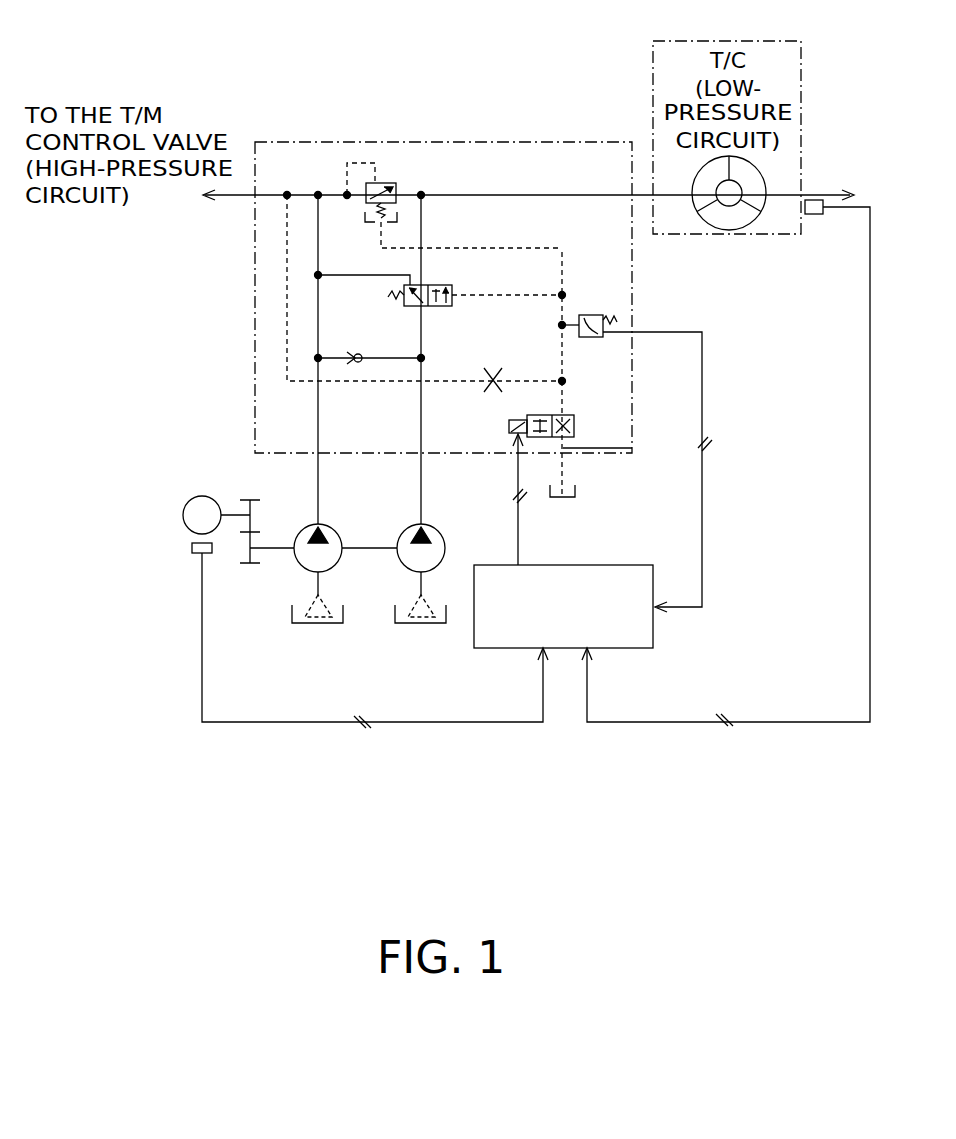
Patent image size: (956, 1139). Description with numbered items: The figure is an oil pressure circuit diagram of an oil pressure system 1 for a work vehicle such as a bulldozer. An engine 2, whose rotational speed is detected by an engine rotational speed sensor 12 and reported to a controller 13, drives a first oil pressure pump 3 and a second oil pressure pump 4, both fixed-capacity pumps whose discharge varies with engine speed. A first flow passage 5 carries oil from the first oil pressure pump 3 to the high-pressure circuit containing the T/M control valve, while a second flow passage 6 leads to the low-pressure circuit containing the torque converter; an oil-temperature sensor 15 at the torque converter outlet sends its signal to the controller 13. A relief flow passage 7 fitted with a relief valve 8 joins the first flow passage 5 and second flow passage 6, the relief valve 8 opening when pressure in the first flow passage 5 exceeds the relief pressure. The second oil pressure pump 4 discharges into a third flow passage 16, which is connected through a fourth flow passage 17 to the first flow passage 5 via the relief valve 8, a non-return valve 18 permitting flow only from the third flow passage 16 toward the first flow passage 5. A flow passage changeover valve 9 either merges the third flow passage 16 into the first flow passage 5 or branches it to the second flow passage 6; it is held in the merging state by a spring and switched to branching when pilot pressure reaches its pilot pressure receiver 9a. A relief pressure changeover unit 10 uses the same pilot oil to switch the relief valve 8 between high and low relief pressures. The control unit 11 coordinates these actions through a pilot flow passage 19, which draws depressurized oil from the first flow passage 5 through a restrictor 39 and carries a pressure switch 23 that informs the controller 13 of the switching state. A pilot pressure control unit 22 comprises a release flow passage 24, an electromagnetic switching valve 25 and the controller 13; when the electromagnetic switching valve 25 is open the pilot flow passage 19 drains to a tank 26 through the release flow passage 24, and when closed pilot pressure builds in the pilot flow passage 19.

The oil pressure system 1 is at (303, 68).
The engine 2 is at (193, 500).
The first oil pressure pump 3 is at (305, 527).
The second oil pressure pump 4 is at (405, 527).
The first flow passage 5 is at (318, 218).
The second flow passage 6 is at (421, 221).
The relief flow passage 7 is at (333, 195).
The relief valve 8 is at (385, 183).
The flow passage changeover valve 9 is at (440, 306).
The pilot pressure receiver 9a is at (455, 289).
The relief pressure changeover unit 10 is at (364, 240).
The control unit 11 is at (808, 363).
The engine rotational speed sensor 12 is at (210, 553).
The controller 13 is at (623, 565).
The oil-temperature sensor 15 is at (815, 215).
The third flow passage 16 is at (423, 410).
The fourth flow passage 17 is at (395, 361).
The non-return valve 18 is at (356, 365).
The pilot flow passage 19 is at (563, 362).
The pilot pressure control unit 22 is at (658, 467).
The pressure switch 23 is at (591, 315).
The release flow passage 24 is at (632, 449).
The electromagnetic switching valve 25 is at (575, 425).
The tank 26 is at (578, 490).
The restrictor 39 is at (497, 371).